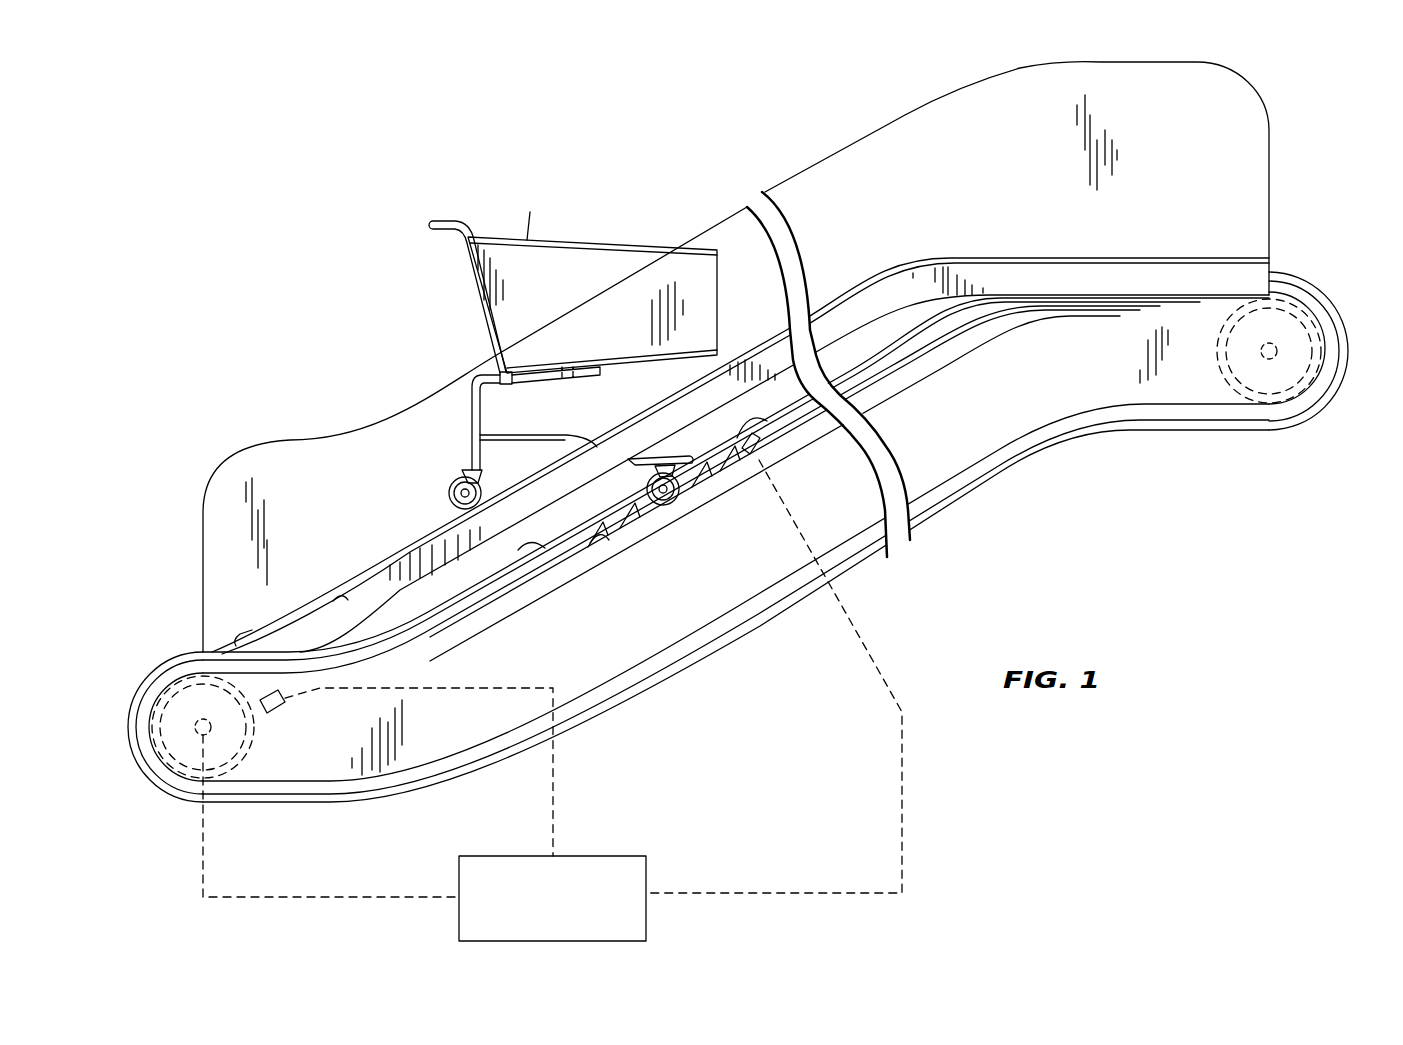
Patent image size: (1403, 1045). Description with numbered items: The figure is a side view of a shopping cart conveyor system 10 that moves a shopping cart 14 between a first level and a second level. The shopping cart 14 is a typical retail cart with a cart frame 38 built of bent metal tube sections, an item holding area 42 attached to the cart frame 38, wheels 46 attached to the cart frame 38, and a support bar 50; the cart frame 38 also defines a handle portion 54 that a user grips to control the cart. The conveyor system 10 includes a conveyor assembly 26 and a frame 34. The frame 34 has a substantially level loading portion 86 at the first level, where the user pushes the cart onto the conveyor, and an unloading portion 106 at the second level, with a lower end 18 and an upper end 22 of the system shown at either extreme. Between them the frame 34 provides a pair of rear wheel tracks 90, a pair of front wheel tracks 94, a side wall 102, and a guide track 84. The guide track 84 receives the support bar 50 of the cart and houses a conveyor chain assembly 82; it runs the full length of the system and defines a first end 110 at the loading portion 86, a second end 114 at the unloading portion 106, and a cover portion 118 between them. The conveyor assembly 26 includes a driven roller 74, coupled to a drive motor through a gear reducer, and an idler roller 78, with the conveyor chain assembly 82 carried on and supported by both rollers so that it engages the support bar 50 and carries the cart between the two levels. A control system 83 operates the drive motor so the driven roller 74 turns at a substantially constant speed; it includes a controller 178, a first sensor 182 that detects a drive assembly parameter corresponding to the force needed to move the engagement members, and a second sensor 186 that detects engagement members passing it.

The shopping cart conveyor system 10 is at (338, 124).
The shopping cart 14 is at (590, 203).
The item holding area 42 is at (622, 278).
The handle portion 54 is at (433, 222).
The cart frame 38 is at (468, 398).
The wheels 46 is at (447, 490).
The support bar 50 is at (683, 478).
The frame 34 is at (200, 554).
The side wall 102 is at (265, 462).
The second end 114 is at (1275, 262).
The rear wheel tracks 90 is at (345, 598).
The first end 110 is at (236, 638).
The guide track 84 is at (522, 548).
The front wheel tracks 94 is at (594, 542).
The conveyor assembly 26 is at (707, 668).
The lower end 18 is at (117, 728).
The loading portion 86 is at (185, 643).
The driven roller 74 is at (247, 750).
The upper end 22 is at (1356, 404).
The unloading portion 106 is at (1305, 266).
The idler roller 78 is at (1235, 385).
The conveyor chain assembly 82 is at (637, 540).
The second sensor 186 is at (742, 456).
The cover portion 118 is at (767, 421).
The control system 83 is at (695, 845).
The controller 178 is at (552, 898).
The first sensor 182 is at (275, 712).